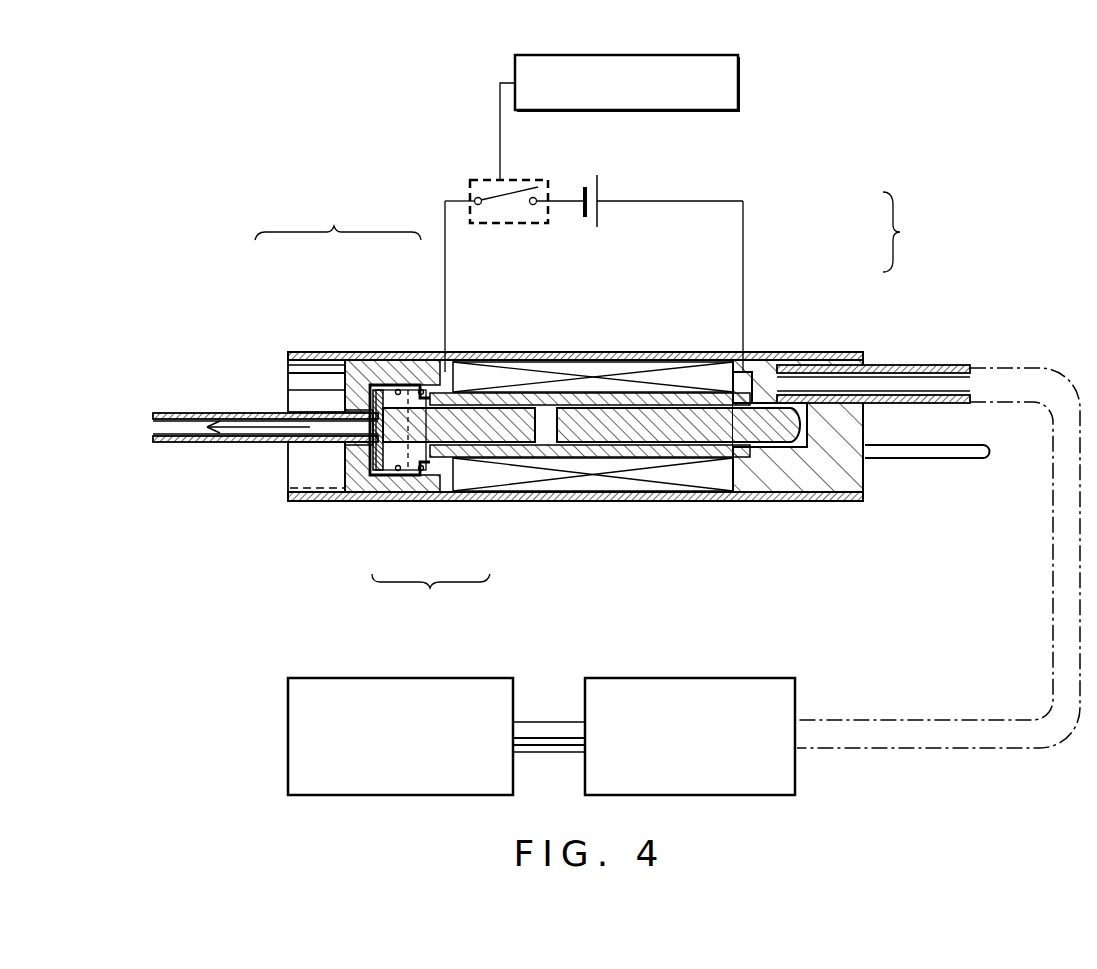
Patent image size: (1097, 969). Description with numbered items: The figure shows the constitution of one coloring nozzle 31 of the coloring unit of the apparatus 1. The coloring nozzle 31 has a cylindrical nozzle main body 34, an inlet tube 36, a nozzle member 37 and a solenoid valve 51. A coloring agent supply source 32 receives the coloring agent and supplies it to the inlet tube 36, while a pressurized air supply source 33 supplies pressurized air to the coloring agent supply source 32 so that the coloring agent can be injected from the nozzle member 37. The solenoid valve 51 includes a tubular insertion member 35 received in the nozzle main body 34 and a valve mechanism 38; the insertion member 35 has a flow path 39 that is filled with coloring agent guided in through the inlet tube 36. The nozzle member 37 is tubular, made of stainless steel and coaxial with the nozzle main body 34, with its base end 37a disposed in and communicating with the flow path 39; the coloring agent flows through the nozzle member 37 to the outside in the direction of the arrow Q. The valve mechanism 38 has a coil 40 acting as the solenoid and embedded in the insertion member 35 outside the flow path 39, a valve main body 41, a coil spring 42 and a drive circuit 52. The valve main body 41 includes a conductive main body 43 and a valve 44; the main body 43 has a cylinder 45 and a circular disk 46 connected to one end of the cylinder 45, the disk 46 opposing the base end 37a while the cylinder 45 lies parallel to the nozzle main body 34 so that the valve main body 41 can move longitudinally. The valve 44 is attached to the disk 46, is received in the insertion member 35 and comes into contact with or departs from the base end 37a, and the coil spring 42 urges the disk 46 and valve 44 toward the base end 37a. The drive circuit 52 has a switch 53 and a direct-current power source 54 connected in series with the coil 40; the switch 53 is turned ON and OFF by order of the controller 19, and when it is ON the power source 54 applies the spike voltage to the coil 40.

The spray apparatus 1 is at (223, 206).
The controller 19 is at (738, 72).
The coloring nozzle 31 is at (600, 502).
The coloring agent supply source 32 is at (700, 679).
The pressurized air supply source 33 is at (425, 679).
The nozzle main body 34 is at (322, 352).
The insertion member 35 is at (455, 372).
The inlet tube 36 is at (900, 365).
The nozzle member 37 is at (210, 444).
The base end 37a is at (352, 444).
The valve mechanism 38 is at (567, 233).
The flow path 39 is at (523, 493).
The coil 40 is at (415, 385).
The valve main body 41 is at (410, 388).
The coil spring 42 is at (380, 375).
The main body 43 is at (431, 591).
The valve 44 is at (340, 440).
The cylinder 45 is at (460, 445).
The circular disk 46 is at (396, 478).
The solenoid valve 51 is at (907, 232).
The drive circuit 52 is at (452, 196).
The switch 53 is at (497, 225).
The direct-current power source 54 is at (597, 227).
The arrow Q is at (233, 412).